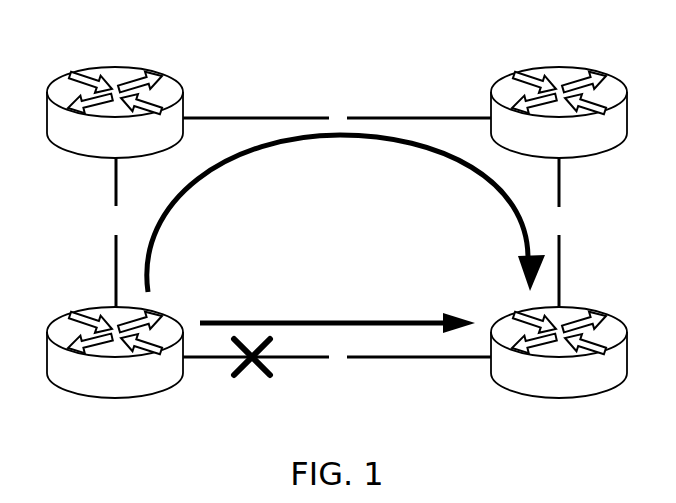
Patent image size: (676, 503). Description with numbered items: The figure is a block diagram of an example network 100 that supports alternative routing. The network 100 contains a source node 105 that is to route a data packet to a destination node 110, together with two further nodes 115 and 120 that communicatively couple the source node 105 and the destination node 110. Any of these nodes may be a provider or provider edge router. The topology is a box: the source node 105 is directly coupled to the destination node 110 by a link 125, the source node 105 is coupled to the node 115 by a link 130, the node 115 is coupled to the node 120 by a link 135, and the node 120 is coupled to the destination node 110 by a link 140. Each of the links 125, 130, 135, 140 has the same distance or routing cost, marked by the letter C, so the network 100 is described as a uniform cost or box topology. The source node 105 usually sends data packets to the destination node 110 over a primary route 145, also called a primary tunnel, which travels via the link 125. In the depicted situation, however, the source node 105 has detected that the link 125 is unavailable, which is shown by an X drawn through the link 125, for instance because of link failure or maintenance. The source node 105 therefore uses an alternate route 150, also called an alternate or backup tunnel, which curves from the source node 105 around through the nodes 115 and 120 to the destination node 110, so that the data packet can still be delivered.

The network 100 is at (332, 43).
The source node 105 is at (97, 385).
The destination node 110 is at (541, 385).
The node 115 is at (97, 145).
The node 120 is at (541, 145).
The link 125 is at (372, 357).
The link 130 is at (114, 270).
The link 135 is at (373, 118).
The link 140 is at (560, 270).
The primary route 145 is at (320, 321).
The alternate route 150 is at (317, 140).